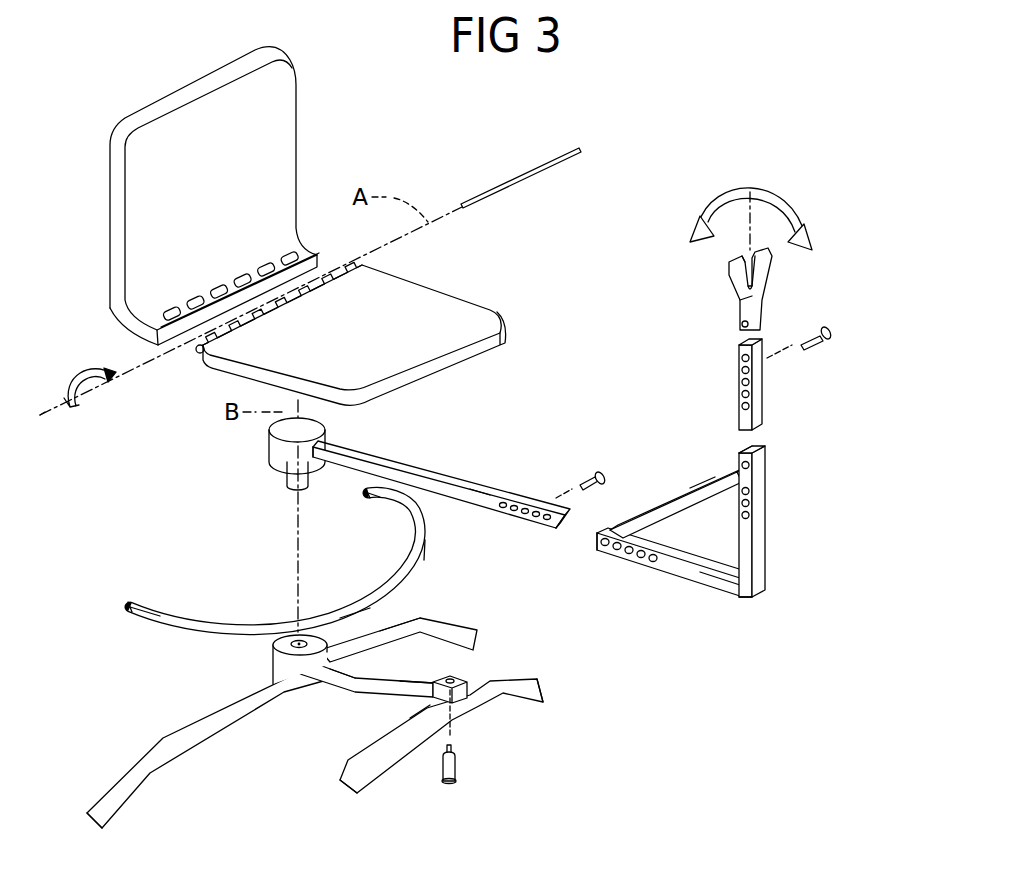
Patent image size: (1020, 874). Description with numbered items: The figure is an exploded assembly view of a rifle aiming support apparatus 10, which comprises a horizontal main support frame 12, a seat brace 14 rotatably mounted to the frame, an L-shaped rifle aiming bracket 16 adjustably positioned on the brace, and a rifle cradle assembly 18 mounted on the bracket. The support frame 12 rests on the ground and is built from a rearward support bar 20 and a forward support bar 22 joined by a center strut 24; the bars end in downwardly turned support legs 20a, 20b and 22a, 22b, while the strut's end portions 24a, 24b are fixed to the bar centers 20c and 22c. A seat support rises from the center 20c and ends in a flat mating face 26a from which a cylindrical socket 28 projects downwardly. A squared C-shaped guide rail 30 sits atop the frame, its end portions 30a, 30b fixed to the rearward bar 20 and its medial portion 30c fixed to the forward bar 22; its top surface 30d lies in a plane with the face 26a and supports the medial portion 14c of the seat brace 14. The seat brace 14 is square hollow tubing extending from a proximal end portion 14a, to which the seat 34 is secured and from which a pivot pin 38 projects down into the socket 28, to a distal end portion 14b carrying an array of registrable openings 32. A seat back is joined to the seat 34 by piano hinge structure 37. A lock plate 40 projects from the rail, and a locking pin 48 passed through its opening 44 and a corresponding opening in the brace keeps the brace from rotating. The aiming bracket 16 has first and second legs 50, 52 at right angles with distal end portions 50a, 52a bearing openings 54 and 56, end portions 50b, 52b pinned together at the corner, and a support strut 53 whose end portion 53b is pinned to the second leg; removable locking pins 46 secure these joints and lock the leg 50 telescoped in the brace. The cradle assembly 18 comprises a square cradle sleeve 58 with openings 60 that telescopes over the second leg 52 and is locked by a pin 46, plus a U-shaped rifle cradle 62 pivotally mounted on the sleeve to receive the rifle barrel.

The support apparatus 10 is at (640, 76).
The horizontal main support frame 12 is at (321, 694).
The seat brace 14 is at (473, 481).
The proximal end portion 14a is at (337, 446).
The distal end portion 14b is at (572, 512).
The medial portion 14c is at (480, 490).
The rifle aiming bracket 16 is at (690, 540).
The rifle cradle assembly 18 is at (767, 317).
The rearward support bar 20 is at (291, 706).
The support leg 20a is at (102, 795).
The support leg 20b is at (470, 628).
The center of rearward support bar 20c is at (272, 680).
The forward support bar 22 is at (423, 739).
The support leg 22a is at (345, 785).
The support leg 22b is at (537, 688).
The center of forward support bar 22c is at (420, 720).
The center strut 24 is at (396, 695).
The end portion of strut 24a is at (356, 690).
The end portion of strut 24b is at (420, 690).
The mating face 26a is at (400, 625).
The socket 28 is at (295, 640).
The guide rail 30 is at (212, 613).
The end portion of guide rail 30a is at (150, 610).
The end portion of guide rail 30b is at (382, 500).
The medial portion of guide rail 30c is at (358, 600).
The top surface of guide rail 30d is at (430, 545).
The registrable openings 32 is at (540, 528).
The seat 34 is at (494, 296).
The piano hinge structure 37 is at (492, 192).
The pivot pin 38 is at (292, 470).
The lock plate 40 is at (479, 720).
The registrable opening 44 is at (470, 690).
The releasable locking pin 46 is at (430, 470).
The locking pin 48 is at (458, 778).
The first leg 50 is at (646, 586).
The distal end portion of first leg 50a is at (612, 558).
The end portion of first leg 50b is at (718, 582).
The second leg 52 is at (787, 525).
The distal end portion of second leg 52a is at (762, 475).
The end portion of second leg 52b is at (754, 582).
The support strut 53 is at (678, 491).
The end portion of support strut 53b is at (715, 478).
The registrable openings 54 is at (640, 572).
The registrable openings 56 is at (765, 495).
The cradle sleeve 58 is at (766, 392).
The registrable openings 60 is at (736, 382).
The rifle cradle 62 is at (733, 312).